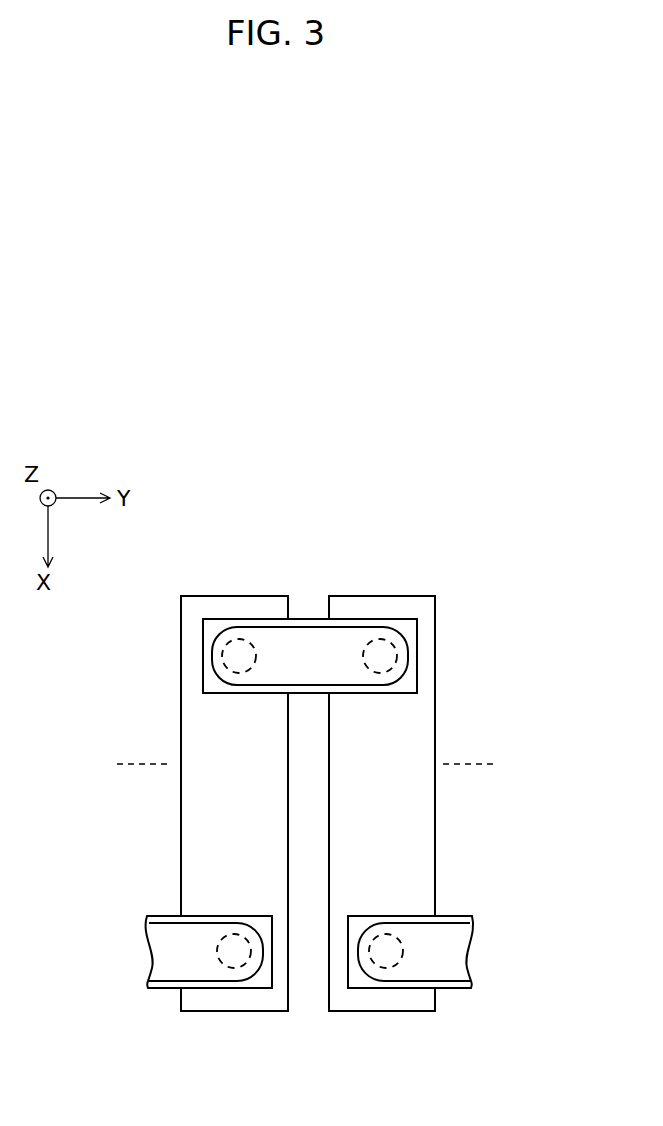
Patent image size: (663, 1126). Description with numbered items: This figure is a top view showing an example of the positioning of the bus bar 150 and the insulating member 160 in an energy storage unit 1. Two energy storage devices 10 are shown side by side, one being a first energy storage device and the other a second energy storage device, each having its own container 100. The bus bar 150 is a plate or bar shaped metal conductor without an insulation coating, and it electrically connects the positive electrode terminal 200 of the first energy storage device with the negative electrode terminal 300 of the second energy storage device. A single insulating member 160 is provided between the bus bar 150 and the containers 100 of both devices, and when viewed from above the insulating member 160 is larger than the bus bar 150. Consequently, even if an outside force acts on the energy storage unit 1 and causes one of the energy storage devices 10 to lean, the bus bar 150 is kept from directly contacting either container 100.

The energy storage unit 1 is at (515, 492).
The energy storage device 10 is at (239, 527).
The container 100 is at (180, 726).
The bus bar 150 is at (303, 632).
The insulating member 160 is at (405, 622).
The positive electrode terminal 200 is at (239, 630).
The negative electrode terminal 300 is at (378, 632).